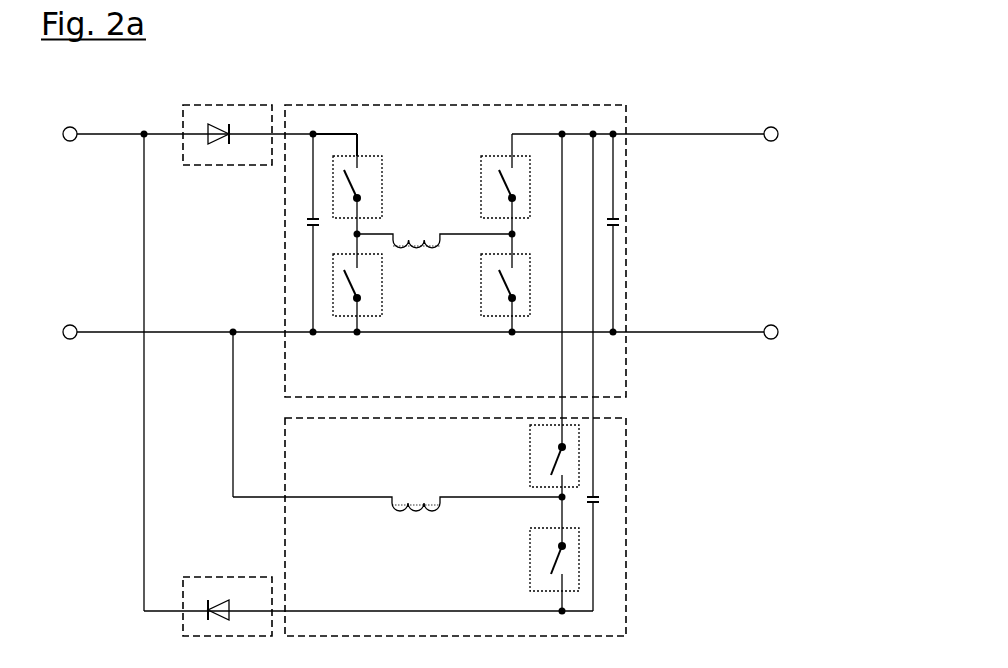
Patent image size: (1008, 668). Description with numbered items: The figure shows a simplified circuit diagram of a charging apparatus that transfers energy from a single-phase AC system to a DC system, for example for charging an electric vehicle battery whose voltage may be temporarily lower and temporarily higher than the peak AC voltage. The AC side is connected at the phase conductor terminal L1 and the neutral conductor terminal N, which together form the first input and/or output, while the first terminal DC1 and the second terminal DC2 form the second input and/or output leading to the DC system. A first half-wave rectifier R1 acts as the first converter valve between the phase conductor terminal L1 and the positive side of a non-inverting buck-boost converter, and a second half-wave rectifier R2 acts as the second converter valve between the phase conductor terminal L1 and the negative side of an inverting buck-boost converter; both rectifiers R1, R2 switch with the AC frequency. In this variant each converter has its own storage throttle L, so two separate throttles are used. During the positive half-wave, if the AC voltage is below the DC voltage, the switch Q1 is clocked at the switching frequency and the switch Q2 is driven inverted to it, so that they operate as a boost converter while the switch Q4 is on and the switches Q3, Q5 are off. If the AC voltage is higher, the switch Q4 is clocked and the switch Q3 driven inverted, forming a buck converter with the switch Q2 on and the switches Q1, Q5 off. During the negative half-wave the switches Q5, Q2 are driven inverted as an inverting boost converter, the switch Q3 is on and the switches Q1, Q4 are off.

The phase conductor terminal L1 is at (41, 136).
The neutral conductor terminal N is at (41, 334).
The first terminal for the DC system DC1 is at (833, 135).
The second terminal for the DC system DC2 is at (833, 334).
The first half-wave rectifier R1 is at (227, 112).
The second half-wave rectifier R2 is at (227, 590).
The switch Q1 is at (530, 283).
The switch Q2 is at (530, 184).
The switch Q3 is at (374, 283).
The switch Q4 is at (374, 195).
The switch Q5 is at (538, 554).
The storage throttle L is at (397, 354).